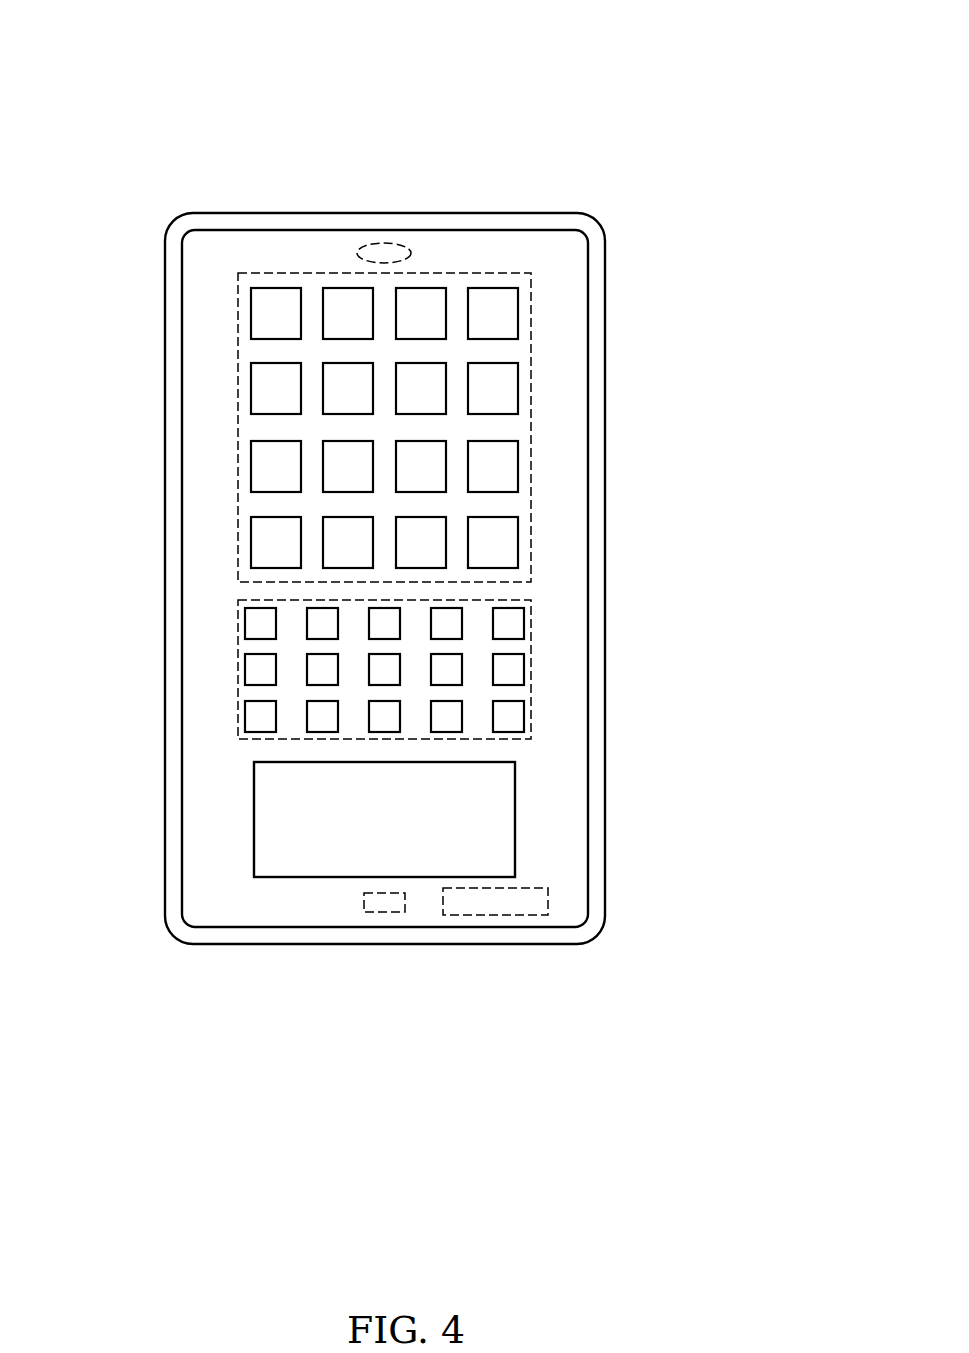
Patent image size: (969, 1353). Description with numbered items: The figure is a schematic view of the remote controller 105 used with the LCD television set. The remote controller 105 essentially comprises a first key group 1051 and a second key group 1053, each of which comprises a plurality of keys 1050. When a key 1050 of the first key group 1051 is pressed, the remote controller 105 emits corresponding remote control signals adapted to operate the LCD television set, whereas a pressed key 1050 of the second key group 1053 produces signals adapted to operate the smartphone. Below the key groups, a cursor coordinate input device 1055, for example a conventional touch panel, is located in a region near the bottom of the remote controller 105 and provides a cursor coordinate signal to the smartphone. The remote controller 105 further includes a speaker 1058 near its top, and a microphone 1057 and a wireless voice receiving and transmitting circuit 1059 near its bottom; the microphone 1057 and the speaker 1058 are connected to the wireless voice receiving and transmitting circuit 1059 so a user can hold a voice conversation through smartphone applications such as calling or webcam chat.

The remote controller 105 is at (213, 167).
The key 1050 is at (265, 315).
The first key group 1051 is at (521, 425).
The second key group 1053 is at (523, 651).
The cursor coordinate input device 1055 is at (475, 811).
The microphone 1057 is at (381, 905).
The speaker 1058 is at (383, 252).
The wireless voice receiving and transmitting circuit 1059 is at (500, 903).